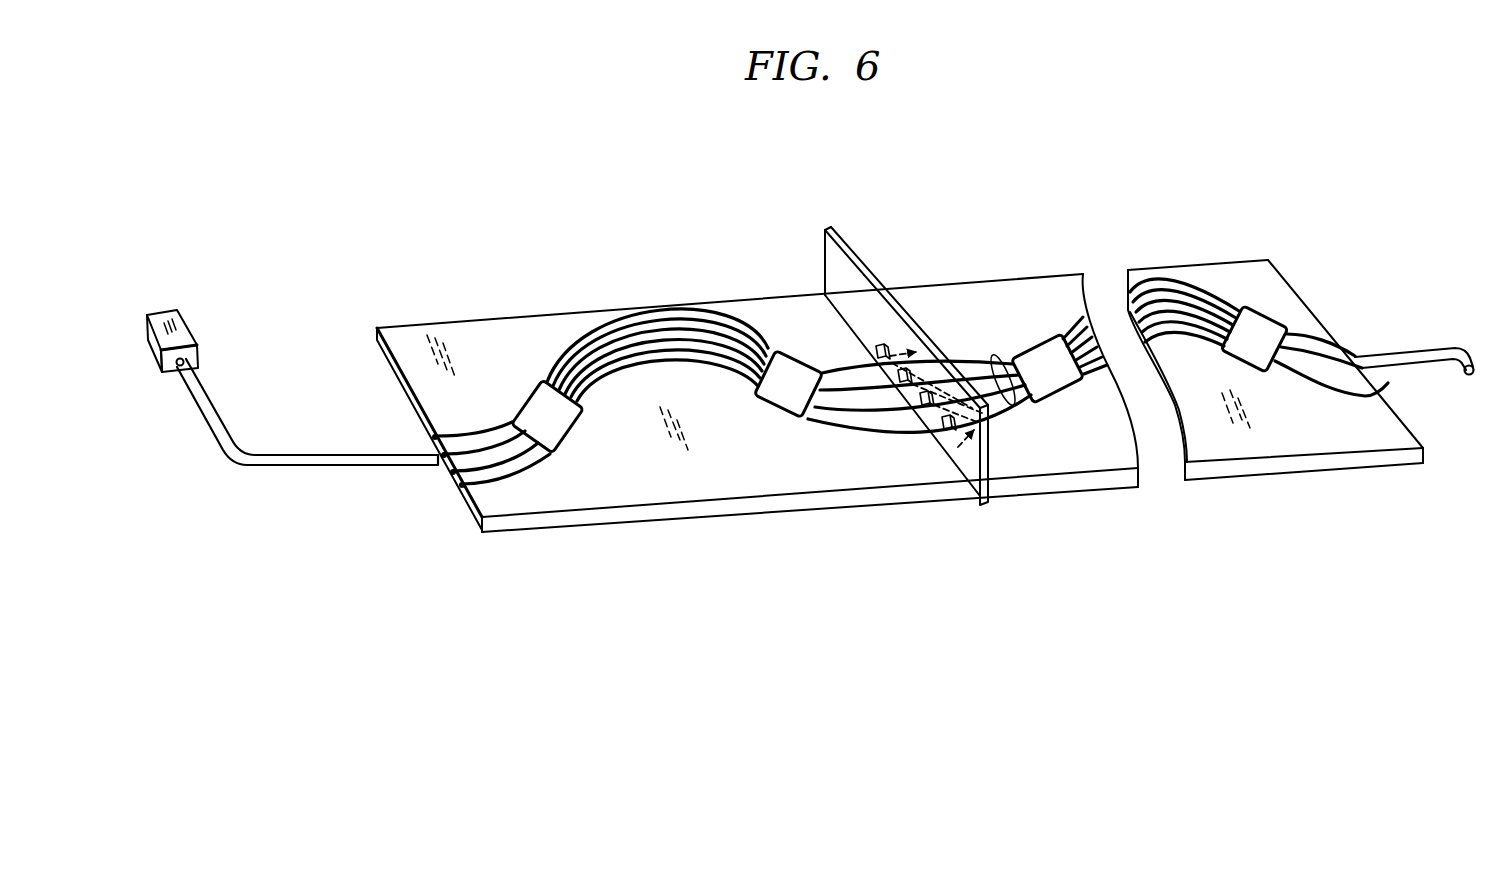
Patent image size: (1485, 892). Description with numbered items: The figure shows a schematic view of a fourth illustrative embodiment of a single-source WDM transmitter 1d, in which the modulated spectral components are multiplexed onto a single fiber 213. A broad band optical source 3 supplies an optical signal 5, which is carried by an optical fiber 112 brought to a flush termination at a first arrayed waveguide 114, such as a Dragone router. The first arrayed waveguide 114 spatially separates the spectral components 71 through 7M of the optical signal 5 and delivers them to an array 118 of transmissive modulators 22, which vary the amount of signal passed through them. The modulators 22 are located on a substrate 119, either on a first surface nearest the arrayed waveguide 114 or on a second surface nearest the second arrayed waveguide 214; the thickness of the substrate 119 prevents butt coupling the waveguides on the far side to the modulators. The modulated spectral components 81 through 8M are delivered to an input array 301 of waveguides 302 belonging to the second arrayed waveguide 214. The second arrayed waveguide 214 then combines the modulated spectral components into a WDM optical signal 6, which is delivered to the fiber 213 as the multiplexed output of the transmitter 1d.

The transmitter 1d is at (632, 156).
The first arrayed waveguide 114 is at (487, 330).
The second arrayed waveguide 214 is at (1068, 258).
The broad band optical source 3 is at (178, 325).
The optical signal 5 is at (227, 404).
The optical fiber 112 is at (315, 452).
The spectral component 71 is at (858, 363).
The spectral component 7M is at (864, 457).
The array of transmissive modulators 118 is at (857, 283).
The substrate 119 is at (843, 233).
The transmissive modulator 22 is at (877, 345).
The modulated spectral component 81 is at (901, 348).
The modulated spectral component 8M is at (985, 450).
The input array 301 is at (993, 356).
The waveguides 302 is at (950, 355).
The fiber 213 is at (1428, 355).
The WDM optical signal 6 is at (1392, 376).